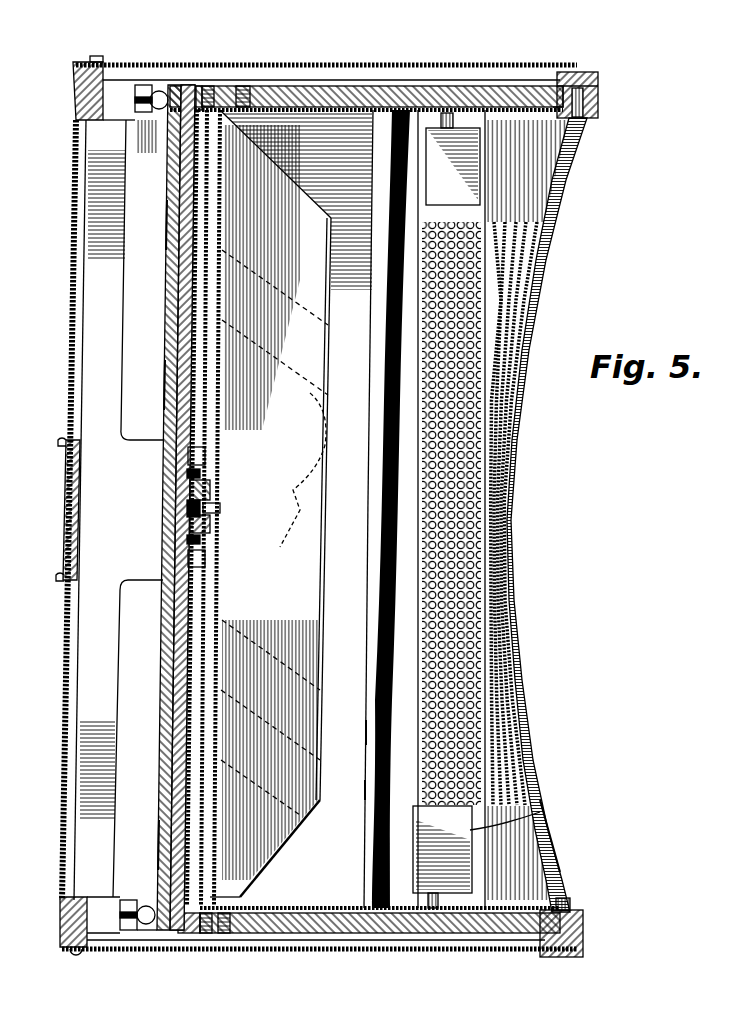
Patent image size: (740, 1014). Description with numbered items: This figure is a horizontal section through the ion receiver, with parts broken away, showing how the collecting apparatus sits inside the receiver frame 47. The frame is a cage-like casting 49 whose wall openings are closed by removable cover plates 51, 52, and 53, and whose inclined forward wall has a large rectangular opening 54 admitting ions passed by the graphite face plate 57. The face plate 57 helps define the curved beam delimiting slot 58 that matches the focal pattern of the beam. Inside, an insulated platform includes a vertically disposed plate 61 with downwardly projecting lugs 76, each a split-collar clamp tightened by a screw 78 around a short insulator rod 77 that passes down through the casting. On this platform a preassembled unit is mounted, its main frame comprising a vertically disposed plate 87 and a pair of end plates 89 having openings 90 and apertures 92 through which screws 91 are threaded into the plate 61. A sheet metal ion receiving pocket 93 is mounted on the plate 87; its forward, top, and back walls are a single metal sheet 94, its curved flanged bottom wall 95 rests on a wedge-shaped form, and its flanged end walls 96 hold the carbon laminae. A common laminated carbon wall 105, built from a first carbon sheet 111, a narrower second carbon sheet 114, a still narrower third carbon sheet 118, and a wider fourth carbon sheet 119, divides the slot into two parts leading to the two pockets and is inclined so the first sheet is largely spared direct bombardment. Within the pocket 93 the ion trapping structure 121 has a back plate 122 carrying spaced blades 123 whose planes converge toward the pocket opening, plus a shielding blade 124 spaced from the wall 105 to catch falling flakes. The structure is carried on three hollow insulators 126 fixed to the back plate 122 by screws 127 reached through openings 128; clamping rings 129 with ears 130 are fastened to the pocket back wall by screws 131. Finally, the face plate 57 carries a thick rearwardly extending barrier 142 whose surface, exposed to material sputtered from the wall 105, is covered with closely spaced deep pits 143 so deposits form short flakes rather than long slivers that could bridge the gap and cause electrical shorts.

The receiver frame 47 is at (603, 84).
The cage-like casting 49 is at (599, 110).
The cover plate 51 is at (137, 330).
The cover plate 52 is at (303, 62).
The cover plate 53 is at (75, 180).
The rectangular opening 54 is at (572, 889).
The face plate 57 is at (542, 724).
The beam delimiting slot 58 is at (556, 852).
The vertically disposed plate 61 is at (165, 222).
The lug 76 is at (153, 85).
The insulator rod 77 is at (148, 906).
The screw 78 is at (138, 100).
The vertically disposed plate 87 is at (175, 740).
The end plate 89 is at (378, 96).
The opening 90 is at (259, 86).
The screw 91 is at (243, 84).
The aperture 92 is at (200, 86).
The ion receiving pocket 93 is at (313, 150).
The metal sheet 94 is at (173, 845).
The bottom wall 95 is at (195, 640).
The end wall 96 is at (442, 114).
The laminated carbon wall 105 is at (384, 576).
The first carbon sheet 111 is at (392, 318).
The second carbon sheet 114 is at (388, 380).
The third carbon sheet 118 is at (378, 733).
The fourth carbon sheet 119 is at (378, 790).
The ion trapping structure 121 is at (300, 679).
The back plate 122 is at (212, 386).
The blade 123 is at (300, 437).
The shielding blade 124 is at (355, 528).
The hollow insulator 126 is at (210, 528).
The screw 127 is at (220, 509).
The opening 128 is at (187, 510).
The clamping ring 129 is at (210, 478).
The ear 130 is at (188, 474).
The screw 131 is at (188, 456).
The barrier 142 is at (465, 830).
The pit 143 is at (476, 560).